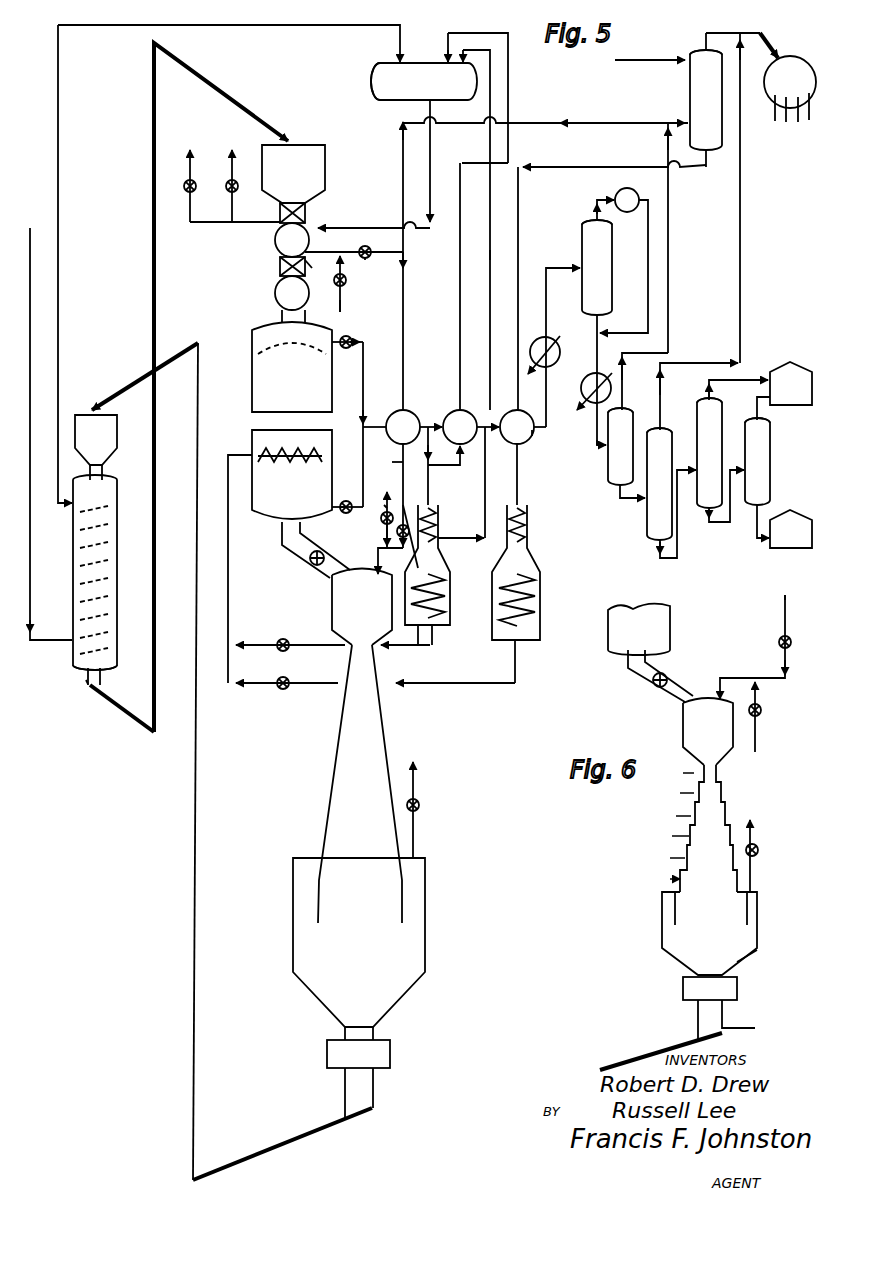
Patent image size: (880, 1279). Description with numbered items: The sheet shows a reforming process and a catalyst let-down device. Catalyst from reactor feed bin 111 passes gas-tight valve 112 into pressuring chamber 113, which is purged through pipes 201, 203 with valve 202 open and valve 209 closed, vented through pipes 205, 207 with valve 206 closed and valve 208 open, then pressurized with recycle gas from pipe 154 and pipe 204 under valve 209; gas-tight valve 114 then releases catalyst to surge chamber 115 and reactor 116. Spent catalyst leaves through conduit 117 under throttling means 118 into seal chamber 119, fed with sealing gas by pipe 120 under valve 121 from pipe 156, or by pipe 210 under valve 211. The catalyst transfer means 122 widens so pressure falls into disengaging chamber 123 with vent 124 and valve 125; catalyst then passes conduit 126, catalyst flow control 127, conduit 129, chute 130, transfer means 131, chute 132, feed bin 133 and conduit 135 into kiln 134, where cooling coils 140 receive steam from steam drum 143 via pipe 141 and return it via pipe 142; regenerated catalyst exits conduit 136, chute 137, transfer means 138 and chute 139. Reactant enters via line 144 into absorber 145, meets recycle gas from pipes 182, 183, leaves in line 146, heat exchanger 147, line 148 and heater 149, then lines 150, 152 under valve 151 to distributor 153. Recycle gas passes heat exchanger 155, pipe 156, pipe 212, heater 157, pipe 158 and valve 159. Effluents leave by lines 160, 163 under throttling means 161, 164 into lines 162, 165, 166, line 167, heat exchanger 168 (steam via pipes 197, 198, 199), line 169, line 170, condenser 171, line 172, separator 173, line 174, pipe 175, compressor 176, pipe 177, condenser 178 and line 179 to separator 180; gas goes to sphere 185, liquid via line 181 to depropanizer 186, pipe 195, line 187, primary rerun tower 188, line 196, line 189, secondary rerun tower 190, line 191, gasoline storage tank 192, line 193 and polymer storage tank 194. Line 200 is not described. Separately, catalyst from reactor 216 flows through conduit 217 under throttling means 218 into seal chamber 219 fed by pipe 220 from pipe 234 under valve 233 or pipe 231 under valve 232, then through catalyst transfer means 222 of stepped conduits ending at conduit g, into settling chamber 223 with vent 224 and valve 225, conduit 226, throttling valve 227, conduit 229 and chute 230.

In FIG. 5, the reactor feed bin 111 is at (293, 174).
In FIG. 5, the gas-tight valve 112 is at (306, 216).
In FIG. 5, the pressuring chamber 113 is at (292, 240).
In FIG. 5, the gas-tight valve 114 is at (280, 264).
In FIG. 5, the surge chamber 115 is at (292, 299).
In FIG. 5, the reactor 116 is at (292, 367).
In FIG. 5, the conduit 117 is at (282, 536).
In FIG. 5, the throttling means 118 is at (310, 560).
In FIG. 5, the seal chamber 119 is at (362, 607).
In FIG. 5, the pipe 120 is at (378, 558).
In FIG. 5, the valve 121 is at (396, 535).
In FIG. 5, the catalyst transfer means 122 is at (360, 784).
In FIG. 5, the disengaging chamber 123 is at (359, 942).
In FIG. 5, the vent 124 is at (414, 845).
In FIG. 5, the valve 125 is at (419, 803).
In FIG. 5, the conduit 126 is at (340, 1036).
In FIG. 5, the catalyst flow control 127 is at (358, 1054).
In FIG. 5, the conduit 129 is at (373, 1103).
In FIG. 5, the chute 130 is at (250, 1152).
In FIG. 5, the catalyst transfer means 131 is at (194, 826).
In FIG. 5, the chute 132 is at (124, 392).
In FIG. 5, the kiln or regenerator feed bin 133 is at (96, 440).
In FIG. 5, the kiln or regenerator 134 is at (73, 600).
In FIG. 5, the conduit 135 is at (103, 470).
In FIG. 5, the conduit 136 is at (83, 684).
In FIG. 5, the chute 137 is at (115, 720).
In FIG. 5, the catalyst transfer means 138 is at (158, 440).
In FIG. 5, the chute 139 is at (205, 79).
In FIG. 5, the cooling coils 140 is at (108, 550).
In FIG. 5, the pipe 141 is at (32, 358).
In FIG. 5, the pipe 142 is at (58, 313).
In FIG. 5, the steam drum 143 is at (424, 81).
In FIG. 5, the line 144 is at (642, 47).
In FIG. 5, the absorber 145 is at (706, 100).
In FIG. 5, the line 146 is at (706, 170).
In FIG. 5, the heat exchanger 147 is at (523, 427).
In FIG. 5, the line 148 is at (517, 473).
In FIG. 5, the heater 149 is at (540, 568).
In FIG. 5, the line 150 is at (305, 690).
In FIG. 5, the valve 151 is at (275, 692).
In FIG. 5, the line 152 is at (222, 462).
In FIG. 5, the distributor 153 is at (292, 474).
In FIG. 5, the pipe 154 is at (606, 122).
In FIG. 5, the heat exchanger 155 is at (414, 427).
In FIG. 5, the pipe 156 is at (384, 462).
In FIG. 5, the heater 157 is at (450, 580).
In FIG. 5, the pipe 158 is at (300, 640).
In FIG. 5, the valve 159 is at (283, 637).
In FIG. 5, the effluent line 160 is at (356, 336).
In FIG. 5, the throttling means 161 is at (350, 352).
In FIG. 5, the line 162 is at (363, 365).
In FIG. 5, the effluent line 163 is at (340, 512).
In FIG. 5, the throttling means 164 is at (346, 500).
In FIG. 5, the line 165 is at (363, 442).
In FIG. 5, the line 166 is at (370, 422).
In FIG. 5, the line 167 is at (428, 412).
In FIG. 5, the heat exchanger 168 is at (471, 303).
In FIG. 5, the line 169 is at (485, 412).
In FIG. 5, the line 170 is at (533, 438).
In FIG. 5, the condenser 171 is at (545, 337).
In FIG. 5, the line 172 is at (548, 292).
In FIG. 5, the liquid gas separator 173 is at (597, 267).
In FIG. 5, the line 174 is at (597, 315).
In FIG. 5, the pipe 175 is at (600, 197).
In FIG. 5, the compressor 176 is at (628, 216).
In FIG. 5, the pipe 177 is at (648, 270).
In FIG. 5, the condenser 178 is at (580, 398).
In FIG. 5, the line 179 is at (597, 450).
In FIG. 5, the liquid gas separator 180 is at (626, 453).
In FIG. 5, the line 181 is at (750, 26).
In FIG. 5, the pipe 182 is at (622, 368).
In FIG. 5, the pipe 183 is at (678, 120).
In FIG. 5, the refinery fuel gas reservoir or sphere 185 is at (790, 89).
In FIG. 5, the depropanizer 186 is at (692, 451).
In FIG. 5, the line 187 is at (666, 563).
In FIG. 5, the primary rerun tower 188 is at (710, 453).
In FIG. 5, the line 189 is at (716, 530).
In FIG. 5, the secondary rerun tower 190 is at (758, 461).
In FIG. 5, the line 191 is at (763, 412).
In FIG. 5, the gasoline storage tank 192 is at (791, 383).
In FIG. 5, the line 193 is at (750, 545).
In FIG. 5, the polymer storage tank 194 is at (791, 529).
In FIG. 5, the pipe 195 is at (660, 385).
In FIG. 5, the line 196 is at (712, 385).
In FIG. 5, the pipe 197 is at (462, 282).
In FIG. 5, the pipe 198 is at (438, 472).
In FIG. 5, the pipe 199 is at (490, 300).
In FIG. 5, the line 200 is at (478, 516).
In FIG. 5, the pipe 201 is at (345, 302).
In FIG. 5, the valve 202 is at (347, 284).
In FIG. 5, the pipe 203 is at (320, 270).
In FIG. 5, the pipe 204 is at (385, 250).
In FIG. 5, the pipe 205 is at (266, 208).
In FIG. 5, the valve 206 is at (226, 182).
In FIG. 5, the pipe 207 is at (190, 203).
In FIG. 5, the valve 208 is at (183, 178).
In FIG. 5, the valve 209 is at (360, 258).
In FIG. 5, the pipe 210 is at (392, 490).
In FIG. 5, the valve 211 is at (382, 506).
In FIG. 5, the pipe 212 is at (408, 548).
In FIG. 6, the reactor 216 is at (639, 629).
In FIG. 6, the conduit 217 is at (628, 660).
In FIG. 6, the throttling means 218 is at (652, 686).
In FIG. 6, the seal chamber 219 is at (708, 731).
In FIG. 6, the pipe 220 is at (748, 673).
In FIG. 6, the catalyst transfer means 222 is at (694, 834).
In FIG. 6, the settling chamber 223 is at (709, 933).
In FIG. 6, the vent 224 is at (752, 874).
In FIG. 6, the valve 225 is at (758, 848).
In FIG. 6, the conduit 226 is at (740, 968).
In FIG. 6, the throttling valve 227 is at (710, 988).
In FIG. 6, the conduit 229 is at (742, 1020).
In FIG. 6, the chute 230 is at (650, 1052).
In FIG. 6, the pipe 231 is at (760, 725).
In FIG. 6, the valve 232 is at (762, 708).
In FIG. 6, the valve 233 is at (778, 642).
In FIG. 6, the pipe 234 is at (785, 618).
In FIG. 6, the conduit G g is at (748, 912).